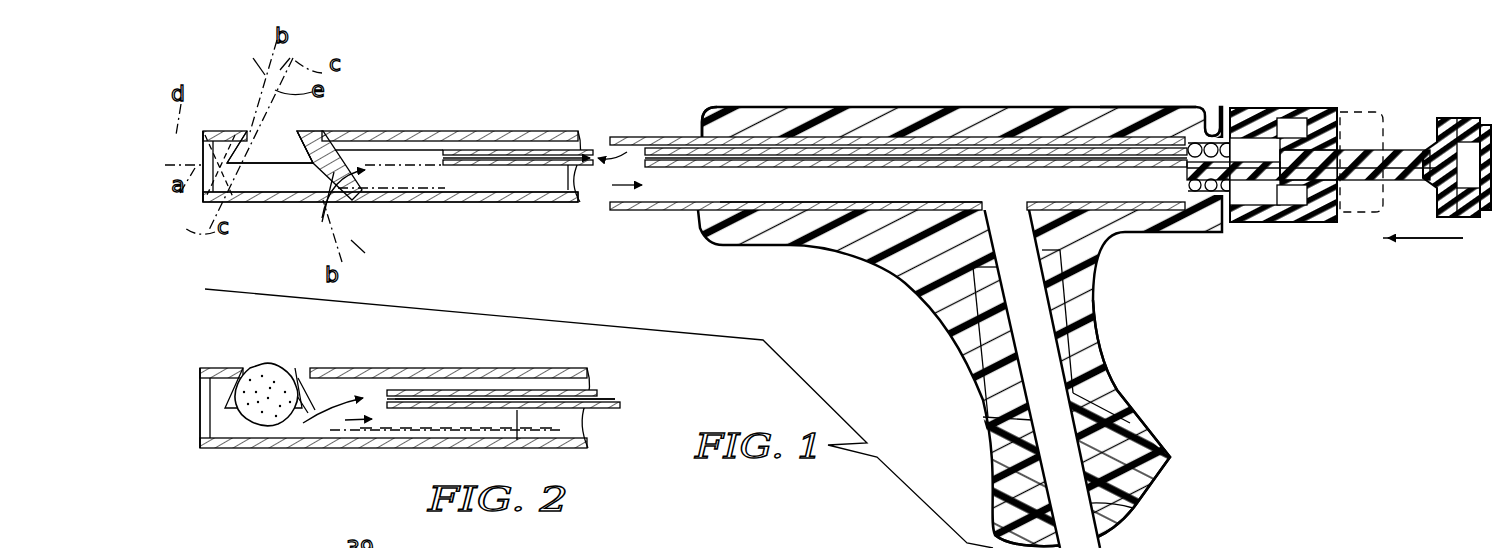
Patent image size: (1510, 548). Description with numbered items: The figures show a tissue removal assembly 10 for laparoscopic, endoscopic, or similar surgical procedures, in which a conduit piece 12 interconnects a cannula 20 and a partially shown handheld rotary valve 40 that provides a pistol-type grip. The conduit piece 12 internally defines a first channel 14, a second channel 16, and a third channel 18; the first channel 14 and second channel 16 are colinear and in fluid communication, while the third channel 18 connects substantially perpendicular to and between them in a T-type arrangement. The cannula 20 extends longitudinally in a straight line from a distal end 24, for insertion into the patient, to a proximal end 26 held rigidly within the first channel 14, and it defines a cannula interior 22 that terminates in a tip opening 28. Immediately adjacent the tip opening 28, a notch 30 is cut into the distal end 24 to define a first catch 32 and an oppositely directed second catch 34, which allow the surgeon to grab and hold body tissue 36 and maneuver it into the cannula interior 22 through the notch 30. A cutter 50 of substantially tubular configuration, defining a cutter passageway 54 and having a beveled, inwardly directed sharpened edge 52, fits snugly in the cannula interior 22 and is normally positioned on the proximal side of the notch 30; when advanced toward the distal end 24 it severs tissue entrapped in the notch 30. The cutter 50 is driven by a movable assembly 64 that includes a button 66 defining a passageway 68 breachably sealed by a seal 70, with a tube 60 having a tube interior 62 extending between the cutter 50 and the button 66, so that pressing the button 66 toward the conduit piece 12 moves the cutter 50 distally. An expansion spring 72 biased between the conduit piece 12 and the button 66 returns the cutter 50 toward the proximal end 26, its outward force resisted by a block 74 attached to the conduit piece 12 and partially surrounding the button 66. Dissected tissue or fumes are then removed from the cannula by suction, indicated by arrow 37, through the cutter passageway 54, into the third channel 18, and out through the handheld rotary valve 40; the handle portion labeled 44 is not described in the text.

In FIG. 1, the tissue removal assembly 10 is at (936, 104).
In FIG. 1, the conduit piece 12 is at (1079, 103).
In FIG. 1, the first channel 14 is at (790, 204).
In FIG. 1, the second channel 16 is at (1173, 152).
In FIG. 1, the third channel 18 is at (1021, 248).
In FIG. 1, the cannula 20 is at (692, 222).
In FIG. 2, the cannula 20 is at (390, 362).
In FIG. 1, the cannula interior 22 is at (612, 188).
In FIG. 1, the distal end 24 is at (230, 120).
In FIG. 1, the proximal end 26 is at (700, 135).
In FIG. 1, the tip opening 28 is at (198, 150).
In FIG. 2, the tip opening 28 is at (198, 400).
In FIG. 1, the notch 30 is at (280, 140).
In FIG. 1, the first catch 32 is at (286, 141).
In FIG. 1, the second catch 34 is at (305, 150).
In FIG. 2, the body tissue 36 is at (256, 363).
In FIG. 2, the arrow 37 is at (352, 421).
In FIG. 1, the handheld rotary valve 40 is at (1174, 443).
In FIG. 1, the handle end cap 44 is at (1122, 513).
In FIG. 1, the cutter 50 is at (238, 212).
In FIG. 2, the cutter 50 is at (304, 383).
In FIG. 1, the sharpened edge 52 is at (352, 200).
In FIG. 2, the sharpened edge 52 is at (287, 430).
In FIG. 1, the cutter passageway 54 is at (319, 211).
In FIG. 1, the tube 60 is at (826, 158).
In FIG. 2, the tube 60 is at (538, 387).
In FIG. 1, the tube interior 62 is at (645, 148).
In FIG. 2, the tube interior 62 is at (622, 404).
In FIG. 1, the movable assembly 64 is at (1366, 106).
In FIG. 1, the button 66 is at (1440, 117).
In FIG. 1, the passageway 68 is at (1373, 180).
In FIG. 1, the seal 70 is at (1484, 124).
In FIG. 1, the expansion spring 72 is at (1208, 136).
In FIG. 1, the block 74 is at (1288, 106).